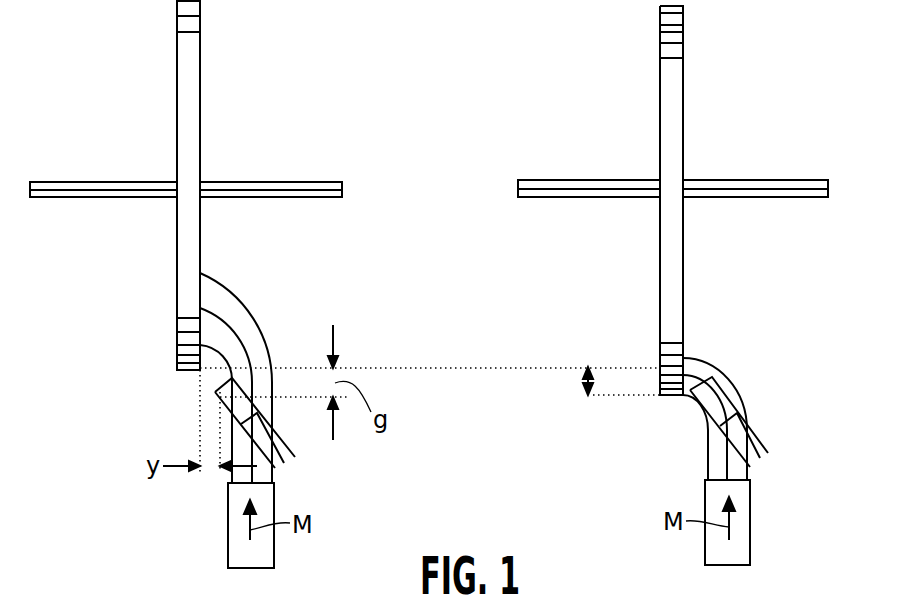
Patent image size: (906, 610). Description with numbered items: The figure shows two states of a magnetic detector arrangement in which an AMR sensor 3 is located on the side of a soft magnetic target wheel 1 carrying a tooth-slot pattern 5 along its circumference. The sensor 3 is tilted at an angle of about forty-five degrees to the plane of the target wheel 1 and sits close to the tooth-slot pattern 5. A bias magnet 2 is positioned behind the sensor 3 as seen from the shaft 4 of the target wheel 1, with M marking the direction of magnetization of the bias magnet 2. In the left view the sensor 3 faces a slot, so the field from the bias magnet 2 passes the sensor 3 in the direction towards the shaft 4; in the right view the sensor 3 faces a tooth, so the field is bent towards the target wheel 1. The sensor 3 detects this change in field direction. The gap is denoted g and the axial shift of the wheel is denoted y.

The soft magnetic target wheel 1 is at (190, 80).
The bias magnet 2 is at (240, 551).
The AMR sensor 3 is at (215, 392).
The shaft 4 is at (90, 182).
The tooth-slot pattern 5 is at (183, 340).